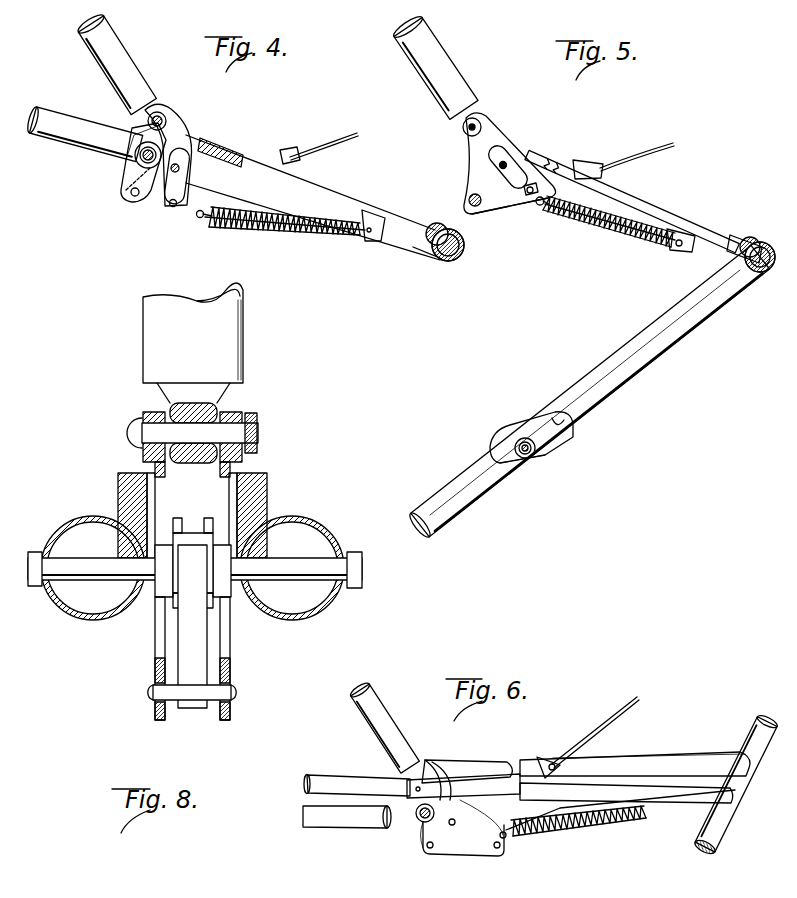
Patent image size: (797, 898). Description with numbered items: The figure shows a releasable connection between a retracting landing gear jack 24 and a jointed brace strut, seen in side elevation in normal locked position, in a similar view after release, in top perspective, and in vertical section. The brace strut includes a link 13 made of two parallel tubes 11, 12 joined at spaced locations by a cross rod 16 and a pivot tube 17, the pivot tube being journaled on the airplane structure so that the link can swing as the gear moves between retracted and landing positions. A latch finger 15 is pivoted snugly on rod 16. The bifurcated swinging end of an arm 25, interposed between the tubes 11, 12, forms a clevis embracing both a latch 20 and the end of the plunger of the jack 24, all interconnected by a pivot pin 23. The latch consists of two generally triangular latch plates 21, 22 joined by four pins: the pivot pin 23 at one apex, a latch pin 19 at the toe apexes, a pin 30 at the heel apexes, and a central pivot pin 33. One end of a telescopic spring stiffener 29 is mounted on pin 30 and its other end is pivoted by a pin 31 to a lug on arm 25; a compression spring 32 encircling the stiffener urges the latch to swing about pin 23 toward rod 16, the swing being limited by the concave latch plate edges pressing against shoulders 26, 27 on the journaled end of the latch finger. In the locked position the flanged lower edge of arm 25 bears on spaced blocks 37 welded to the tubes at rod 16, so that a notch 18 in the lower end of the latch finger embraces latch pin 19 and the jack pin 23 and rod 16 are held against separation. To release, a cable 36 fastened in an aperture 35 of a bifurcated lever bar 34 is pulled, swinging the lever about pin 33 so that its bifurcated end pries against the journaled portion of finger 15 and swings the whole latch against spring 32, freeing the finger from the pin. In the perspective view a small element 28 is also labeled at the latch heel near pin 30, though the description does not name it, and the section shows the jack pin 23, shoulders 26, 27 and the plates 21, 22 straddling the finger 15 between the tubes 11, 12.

In FIG. 4, the tube 11 is at (83, 136).
In FIG. 5, the tube 11 is at (628, 376).
In FIG. 8, the tube 11 is at (92, 634).
In FIG. 6, the tube 11 is at (712, 766).
In FIG. 8, the tube 12 is at (300, 626).
In FIG. 6, the tube 12 is at (680, 802).
In FIG. 4, the link 13 is at (415, 262).
In FIG. 5, the link 13 is at (683, 358).
In FIG. 6, the link 13 is at (680, 750).
In FIG. 4, the latch finger 15 is at (119, 185).
In FIG. 5, the latch finger 15 is at (557, 461).
In FIG. 8, the latch finger 15 is at (196, 719).
In FIG. 6, the latch finger 15 is at (416, 844).
In FIG. 4, the cross rod 16 is at (133, 118).
In FIG. 5, the cross rod 16 is at (525, 460).
In FIG. 8, the cross rod 16 is at (77, 571).
In FIG. 6, the cross rod 16 is at (411, 826).
In FIG. 4, the pivot tube 17 is at (455, 258).
In FIG. 5, the pivot tube 17 is at (760, 275).
In FIG. 6, the pivot tube 17 is at (705, 861).
In FIG. 5, the notch 18 is at (568, 418).
In FIG. 4, the latch pin 19 is at (133, 199).
In FIG. 5, the latch pin 19 is at (468, 201).
In FIG. 8, the latch pin 19 is at (151, 694).
In FIG. 6, the latch pin 19 is at (426, 849).
In FIG. 5, the latch 20 is at (499, 222).
In FIG. 8, the latch 20 is at (241, 657).
In FIG. 6, the latch 20 is at (475, 864).
In FIG. 4, the latch plate 21 is at (181, 126).
In FIG. 5, the latch plate 21 is at (491, 137).
In FIG. 8, the latch plate 21 is at (160, 726).
In FIG. 6, the latch plate 21 is at (440, 768).
In FIG. 8, the latch plate 22 is at (226, 726).
In FIG. 6, the latch plate 22 is at (490, 846).
In FIG. 4, the pivot pin 23 is at (166, 114).
In FIG. 5, the pivot pin 23 is at (463, 128).
In FIG. 8, the pivot pin 23 is at (262, 432).
In FIG. 6, the pivot pin 23 is at (412, 787).
In FIG. 4, the jack 24 is at (110, 59).
In FIG. 5, the jack 24 is at (433, 65).
In FIG. 8, the jack 24 is at (170, 335).
In FIG. 6, the jack 24 is at (380, 722).
In FIG. 4, the arm 25 is at (231, 152).
In FIG. 5, the arm 25 is at (666, 210).
In FIG. 8, the arm 25 is at (150, 413).
In FIG. 6, the arm 25 is at (490, 762).
In FIG. 8, the shoulder 26 is at (225, 606).
In FIG. 8, the shoulder 27 is at (162, 606).
In FIG. 6, the pin 28 is at (505, 843).
In FIG. 4, the telescopic spring stiffener 29 is at (262, 232).
In FIG. 5, the telescopic spring stiffener 29 is at (592, 227).
In FIG. 6, the telescopic spring stiffener 29 is at (574, 836).
In FIG. 4, the pin 30 is at (215, 228).
In FIG. 5, the pin 30 is at (545, 209).
In FIG. 6, the pin 30 is at (505, 849).
In FIG. 4, the pin 31 is at (372, 243).
In FIG. 5, the pin 31 is at (680, 253).
In FIG. 4, the compression spring 32 is at (301, 234).
In FIG. 5, the compression spring 32 is at (632, 234).
In FIG. 6, the compression spring 32 is at (605, 827).
In FIG. 4, the pivot pin 33 is at (178, 166).
In FIG. 5, the pivot pin 33 is at (499, 166).
In FIG. 6, the pivot pin 33 is at (452, 828).
In FIG. 4, the bifurcated lever bar 34 is at (168, 183).
In FIG. 5, the bifurcated lever bar 34 is at (496, 151).
In FIG. 8, the bifurcated lever bar 34 is at (175, 527).
In FIG. 4, the aperture 35 is at (174, 207).
In FIG. 5, the aperture 35 is at (531, 197).
In FIG. 4, the release cable 36 is at (334, 119).
In FIG. 5, the release cable 36 is at (657, 143).
In FIG. 6, the release cable 36 is at (617, 704).
In FIG. 4, the block 37 is at (135, 141).
In FIG. 5, the block 37 is at (501, 443).
In FIG. 8, the block 37 is at (118, 489).